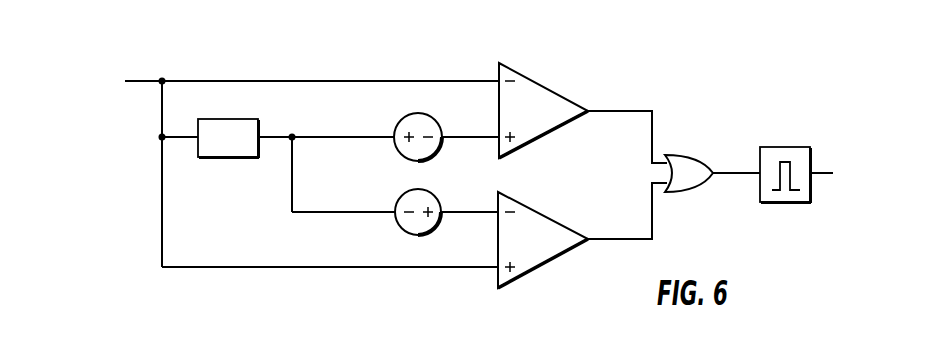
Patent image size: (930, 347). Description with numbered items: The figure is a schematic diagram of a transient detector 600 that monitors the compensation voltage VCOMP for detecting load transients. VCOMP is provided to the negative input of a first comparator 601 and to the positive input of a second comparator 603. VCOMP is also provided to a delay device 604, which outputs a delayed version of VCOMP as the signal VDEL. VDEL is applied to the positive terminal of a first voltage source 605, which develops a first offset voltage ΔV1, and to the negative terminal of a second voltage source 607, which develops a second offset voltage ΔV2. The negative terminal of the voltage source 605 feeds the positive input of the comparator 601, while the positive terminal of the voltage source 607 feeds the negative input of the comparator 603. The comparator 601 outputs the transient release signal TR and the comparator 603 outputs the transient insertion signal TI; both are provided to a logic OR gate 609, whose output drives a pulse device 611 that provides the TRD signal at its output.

The transient detector 600 is at (763, 66).
The first comparator 601 is at (558, 93).
The second comparator 603 is at (548, 213).
The delay device 604 is at (213, 119).
The first voltage source 605 is at (400, 118).
The second voltage source 607 is at (394, 222).
The logic OR gate 609 is at (706, 162).
The pulse device 611 is at (782, 146).